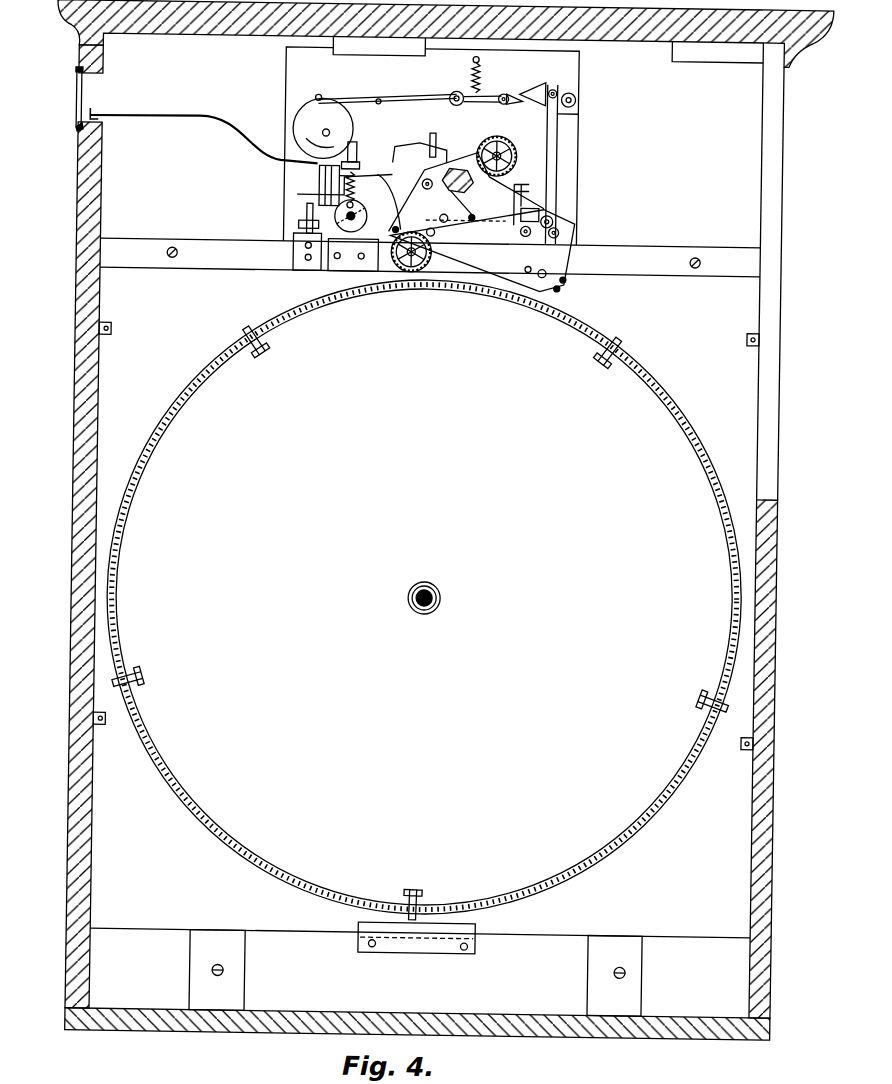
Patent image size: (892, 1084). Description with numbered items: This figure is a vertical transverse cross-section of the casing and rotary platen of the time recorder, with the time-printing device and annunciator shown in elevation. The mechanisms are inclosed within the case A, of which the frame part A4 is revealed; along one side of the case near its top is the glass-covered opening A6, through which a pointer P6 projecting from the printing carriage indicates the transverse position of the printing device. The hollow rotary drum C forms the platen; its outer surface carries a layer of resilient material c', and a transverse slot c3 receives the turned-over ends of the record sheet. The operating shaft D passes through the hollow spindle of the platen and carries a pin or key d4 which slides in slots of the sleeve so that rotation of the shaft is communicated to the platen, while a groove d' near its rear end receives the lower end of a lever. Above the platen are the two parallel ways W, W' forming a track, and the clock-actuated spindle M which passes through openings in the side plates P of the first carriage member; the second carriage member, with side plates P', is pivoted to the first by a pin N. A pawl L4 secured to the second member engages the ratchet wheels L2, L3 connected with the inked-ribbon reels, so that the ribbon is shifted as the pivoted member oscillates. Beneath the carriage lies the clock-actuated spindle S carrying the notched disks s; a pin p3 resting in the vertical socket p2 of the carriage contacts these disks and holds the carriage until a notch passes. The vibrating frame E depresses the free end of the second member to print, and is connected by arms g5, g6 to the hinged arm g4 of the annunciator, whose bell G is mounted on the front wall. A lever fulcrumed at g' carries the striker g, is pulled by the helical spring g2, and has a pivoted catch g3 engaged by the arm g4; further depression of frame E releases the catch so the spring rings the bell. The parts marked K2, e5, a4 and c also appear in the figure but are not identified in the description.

The case A is at (800, 40).
The frame part A4 is at (240, 244).
The glass covered opening A6 is at (68, 108).
The pointer P6 is at (200, 122).
The side plate P is at (431, 146).
The side plate P' is at (482, 249).
The bell G is at (323, 128).
The striker g is at (408, 94).
The fulcrum g' is at (455, 85).
The helical spring g2 is at (474, 70).
The catch g3 is at (508, 92).
The hinged arm g4 is at (540, 80).
The arm g5 is at (552, 142).
The arm g6 is at (555, 208).
The vibrating frame E is at (520, 184).
The post K2 is at (432, 136).
The ratchet wheel L2 is at (498, 142).
The ratchet wheel L3 is at (408, 272).
The pawl L4 is at (389, 201).
The clock actuated spindle M is at (420, 190).
The pin N is at (462, 205).
The way W is at (455, 180).
The way W' is at (318, 185).
The pin p3 is at (351, 150).
The vertical socket p2 is at (354, 166).
The disk s is at (338, 206).
The clock actuated spindle S is at (345, 233).
The block e5 is at (289, 256).
The bracket a4 is at (350, 250).
The rotary drum C is at (118, 510).
The rim c is at (424, 596).
The layer of resilient material c' is at (424, 597).
The transverse slot c3 is at (615, 355).
The operating shaft D is at (437, 590).
The groove d' is at (424, 582).
The pin or key d4 is at (410, 595).